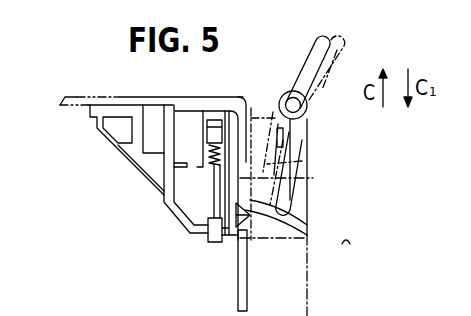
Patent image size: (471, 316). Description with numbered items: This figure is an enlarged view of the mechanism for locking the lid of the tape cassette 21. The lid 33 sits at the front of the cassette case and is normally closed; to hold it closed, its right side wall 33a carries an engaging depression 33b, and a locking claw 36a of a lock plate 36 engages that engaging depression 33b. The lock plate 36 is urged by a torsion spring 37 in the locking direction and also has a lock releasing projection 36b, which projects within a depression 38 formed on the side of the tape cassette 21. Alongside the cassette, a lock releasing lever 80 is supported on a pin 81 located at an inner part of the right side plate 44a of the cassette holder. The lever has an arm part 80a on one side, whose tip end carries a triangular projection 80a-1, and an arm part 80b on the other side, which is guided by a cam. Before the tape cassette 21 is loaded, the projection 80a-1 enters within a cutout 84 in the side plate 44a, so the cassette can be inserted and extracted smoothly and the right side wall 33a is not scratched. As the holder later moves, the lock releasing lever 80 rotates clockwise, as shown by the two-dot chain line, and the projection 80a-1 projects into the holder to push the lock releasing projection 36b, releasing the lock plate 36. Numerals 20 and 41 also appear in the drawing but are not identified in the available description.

The tape cassette 21 is at (98, 93).
The lid 33 is at (162, 97).
The right side wall 33a is at (252, 110).
The engaging depression 33b is at (313, 178).
The lock plate 36 is at (198, 203).
The locking claw 36a is at (302, 187).
The lock releasing projection 36b is at (305, 243).
The torsion spring 37 is at (196, 170).
The depression 38 is at (252, 241).
The right side plate 44a is at (307, 299).
The lock releasing lever 80 is at (297, 137).
The arm part 80a is at (302, 161).
The triangular projection 80a-1 is at (308, 222).
The arm part 80b is at (322, 36).
The pin 81 is at (291, 97).
The cutout 84 is at (350, 244).
The frame 20 is at (90, 311).
The member 41 is at (160, 305).